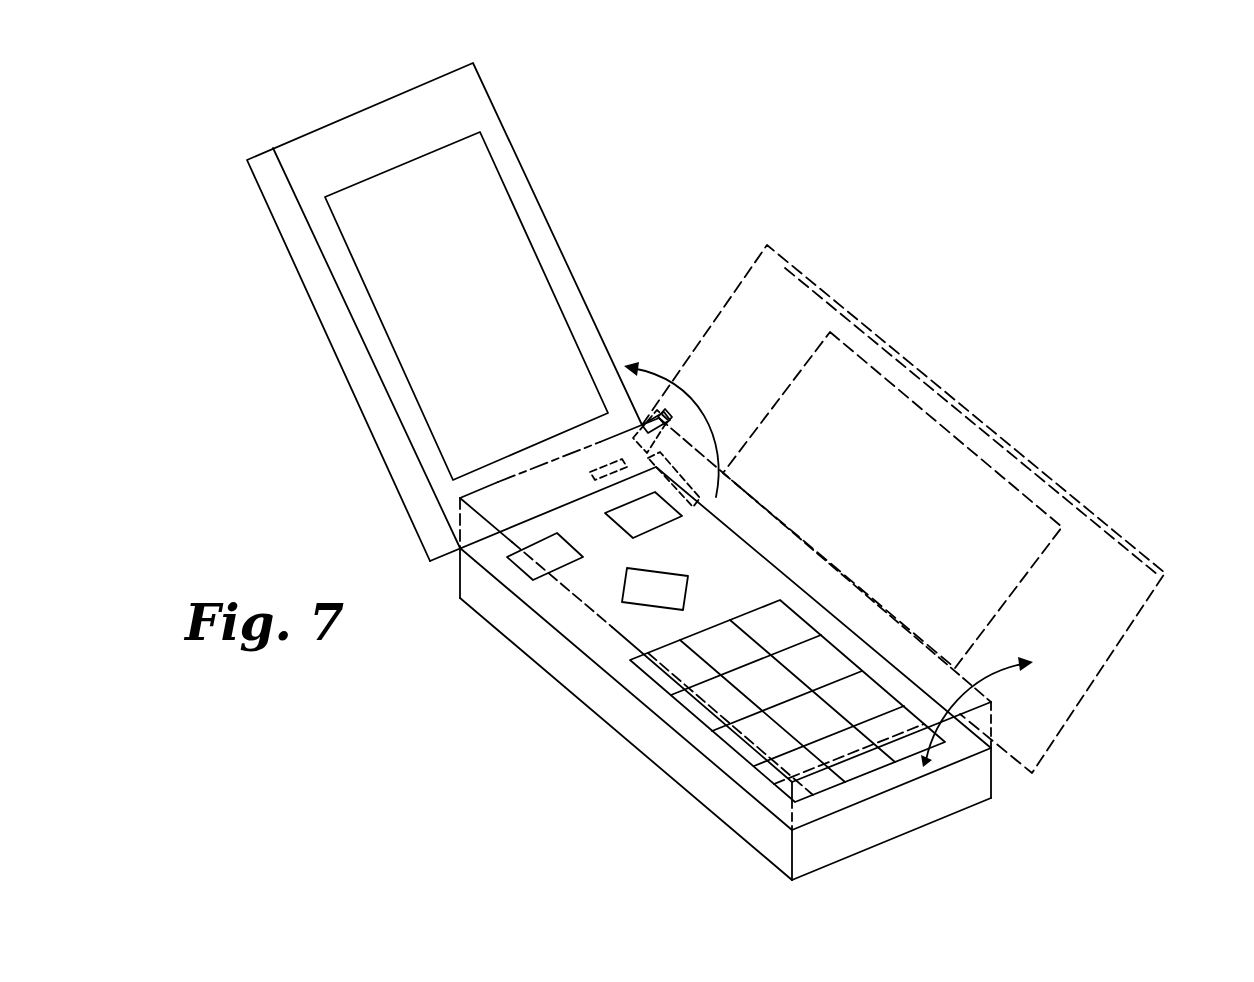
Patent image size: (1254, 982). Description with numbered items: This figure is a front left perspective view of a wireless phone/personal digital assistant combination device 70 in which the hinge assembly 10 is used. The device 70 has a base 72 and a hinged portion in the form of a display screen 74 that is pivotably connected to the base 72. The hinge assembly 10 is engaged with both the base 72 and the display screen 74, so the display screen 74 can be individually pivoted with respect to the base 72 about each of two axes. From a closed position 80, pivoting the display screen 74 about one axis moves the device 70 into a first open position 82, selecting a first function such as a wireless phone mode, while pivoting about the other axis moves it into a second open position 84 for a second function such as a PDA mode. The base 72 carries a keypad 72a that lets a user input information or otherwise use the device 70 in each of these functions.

The hinge assembly 10 is at (641, 424).
The wireless phone/personal digital assistant (PDA) combination device 70 is at (877, 277).
The base 72 is at (890, 822).
The keypad 72a is at (855, 717).
The display screen 74 is at (460, 104).
The closed position 80 is at (668, 724).
The first open position 82 is at (540, 230).
The second open position 84 is at (982, 440).